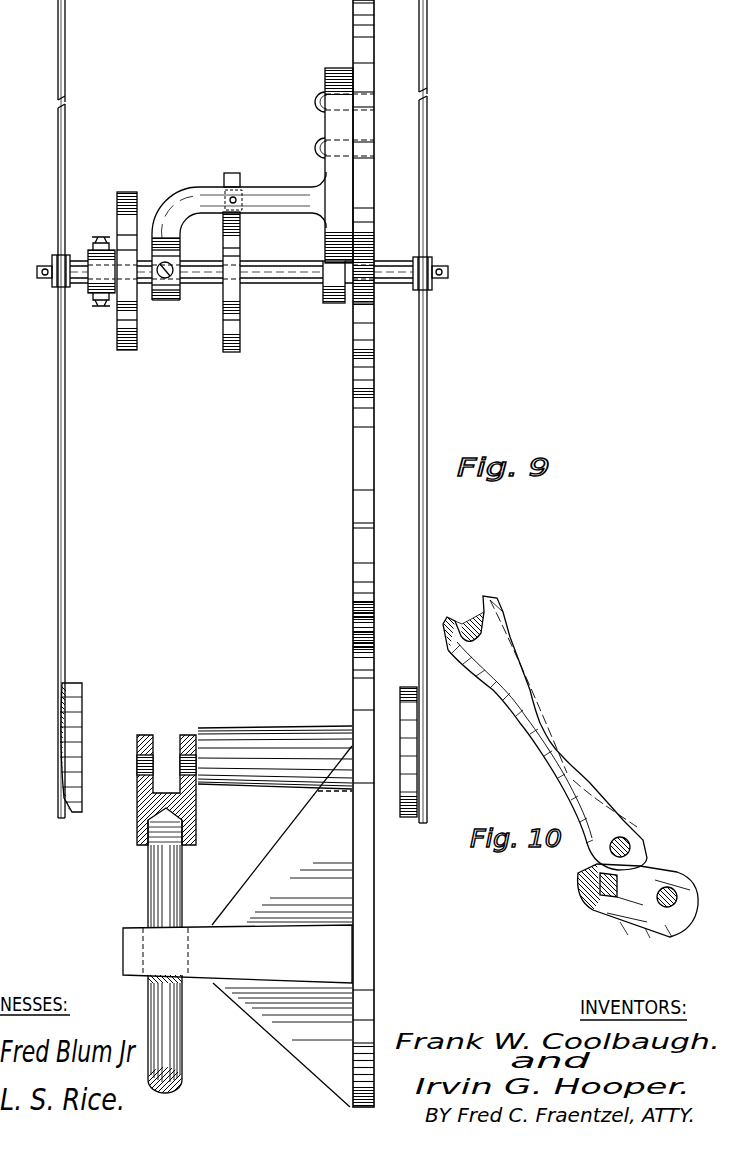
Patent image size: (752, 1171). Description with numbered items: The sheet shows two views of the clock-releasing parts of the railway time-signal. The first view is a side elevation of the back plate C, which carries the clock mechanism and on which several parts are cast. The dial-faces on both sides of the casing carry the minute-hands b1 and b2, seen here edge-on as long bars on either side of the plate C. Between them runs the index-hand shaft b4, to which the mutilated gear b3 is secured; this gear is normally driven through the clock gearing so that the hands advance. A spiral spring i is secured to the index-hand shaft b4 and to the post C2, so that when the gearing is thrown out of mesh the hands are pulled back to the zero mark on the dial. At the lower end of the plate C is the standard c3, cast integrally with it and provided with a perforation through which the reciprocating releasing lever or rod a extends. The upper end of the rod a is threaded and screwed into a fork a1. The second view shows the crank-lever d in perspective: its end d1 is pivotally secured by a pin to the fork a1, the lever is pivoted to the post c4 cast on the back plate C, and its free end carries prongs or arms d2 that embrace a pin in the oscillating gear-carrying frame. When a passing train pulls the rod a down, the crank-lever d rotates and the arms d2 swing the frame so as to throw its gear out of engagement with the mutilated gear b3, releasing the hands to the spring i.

In FIG. 9, the back plate C is at (352, 527).
In FIG. 9, the post C2 is at (239, 230).
In FIG. 9, the standard c3 is at (237, 926).
In FIG. 9, the post c4 is at (273, 740).
In FIG. 9, the minute-hand b1 is at (57, 343).
In FIG. 9, the minute-hand b2 is at (427, 219).
In FIG. 9, the mutilated gear b3 is at (117, 216).
In FIG. 9, the index-hand shaft b4 is at (275, 284).
In FIG. 9, the spiral spring i is at (234, 178).
In FIG. 9, the releasing lever or rod a is at (184, 874).
In FIG. 9, the fork a1 is at (144, 806).
In FIG. 10, the crank-lever d is at (552, 742).
In FIG. 10, the prongs or arms d2 is at (456, 620).
In FIG. 10, the end of crank-lever d1 is at (690, 884).